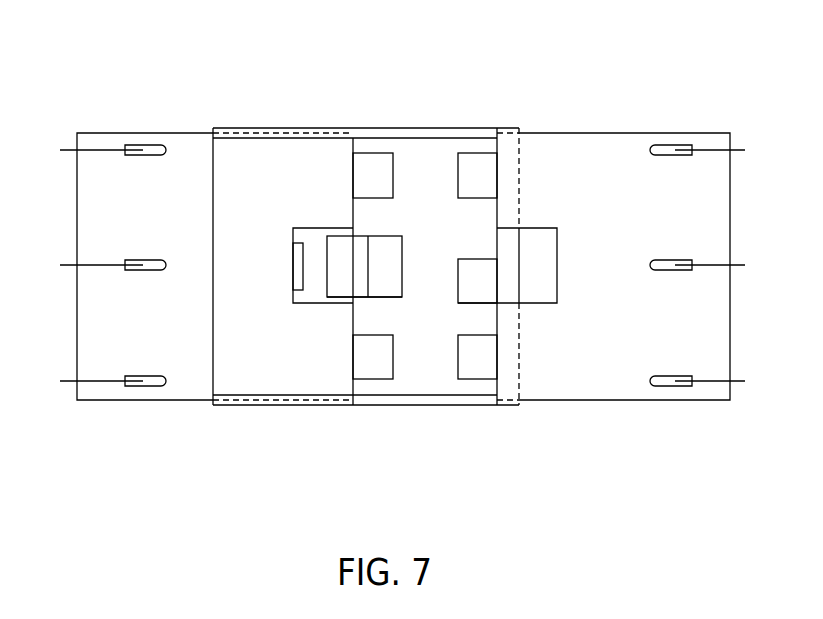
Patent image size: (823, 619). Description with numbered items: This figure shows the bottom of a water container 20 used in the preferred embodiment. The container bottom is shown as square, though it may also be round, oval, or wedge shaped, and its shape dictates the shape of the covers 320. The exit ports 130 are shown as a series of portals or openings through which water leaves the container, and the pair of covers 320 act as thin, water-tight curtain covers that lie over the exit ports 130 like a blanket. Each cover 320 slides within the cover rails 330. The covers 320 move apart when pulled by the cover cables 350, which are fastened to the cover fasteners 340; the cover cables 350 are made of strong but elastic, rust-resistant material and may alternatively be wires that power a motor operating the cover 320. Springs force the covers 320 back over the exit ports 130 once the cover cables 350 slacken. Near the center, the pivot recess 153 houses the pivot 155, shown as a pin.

The water container 20 is at (420, 106).
The exit ports 130 is at (300, 250).
The pivot recess 153 is at (377, 248).
The pivot 155 is at (358, 288).
The covers 320 is at (207, 368).
The cover rails 330 is at (474, 133).
The cover fasteners 340 is at (162, 149).
The cover cables 350 is at (60, 150).